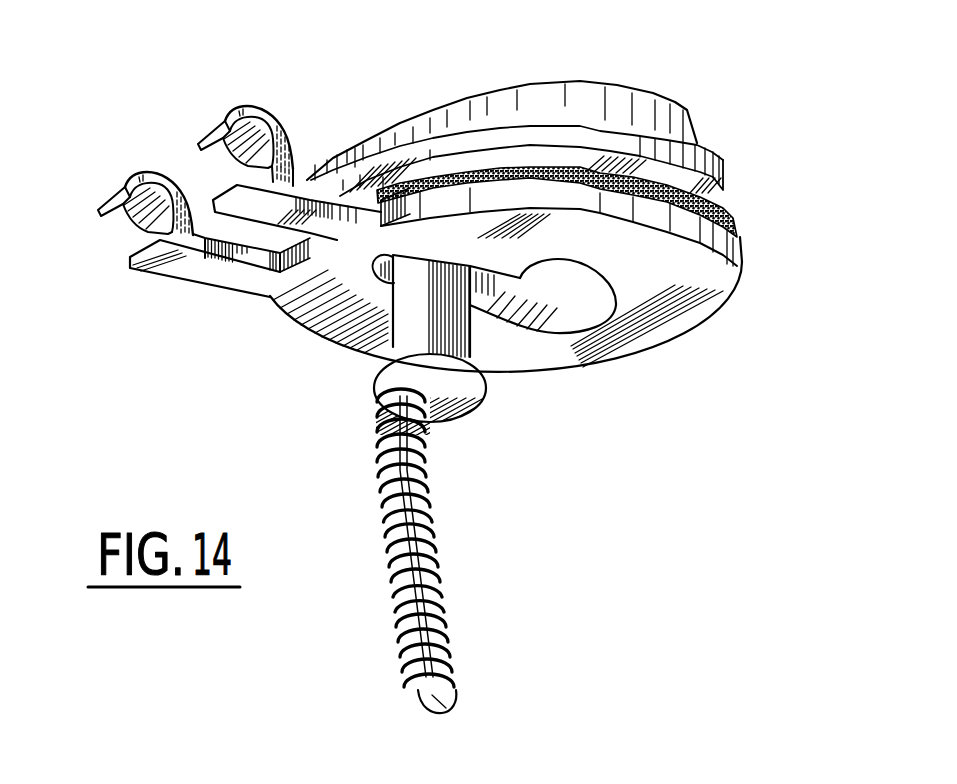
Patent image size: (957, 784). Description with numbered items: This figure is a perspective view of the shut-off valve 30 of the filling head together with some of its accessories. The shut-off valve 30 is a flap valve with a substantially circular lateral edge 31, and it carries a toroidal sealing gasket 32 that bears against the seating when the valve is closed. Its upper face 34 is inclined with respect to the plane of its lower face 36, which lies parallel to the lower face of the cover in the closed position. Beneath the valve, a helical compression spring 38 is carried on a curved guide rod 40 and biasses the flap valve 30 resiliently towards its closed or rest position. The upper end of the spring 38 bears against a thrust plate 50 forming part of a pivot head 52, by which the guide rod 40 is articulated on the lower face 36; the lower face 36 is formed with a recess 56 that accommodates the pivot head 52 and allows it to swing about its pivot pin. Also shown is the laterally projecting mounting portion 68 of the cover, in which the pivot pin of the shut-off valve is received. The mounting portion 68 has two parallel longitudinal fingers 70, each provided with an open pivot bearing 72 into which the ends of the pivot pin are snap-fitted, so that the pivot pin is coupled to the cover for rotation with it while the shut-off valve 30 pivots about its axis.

The shut-off valve 30 is at (663, 269).
The lateral edge 31 is at (742, 242).
The toroidal sealing gasket 32 is at (733, 212).
The upper face 34 is at (556, 104).
The lower face 36 is at (727, 284).
The helical compression spring 38 is at (425, 512).
The curved guide rod 40 is at (415, 607).
The thrust plate 50 is at (483, 405).
The pivot head 52 is at (408, 314).
The recess 56 is at (563, 292).
The mounting portion 68 is at (212, 296).
The longitudinal fingers 70 is at (308, 182).
The open pivot bearing 72 is at (225, 113).